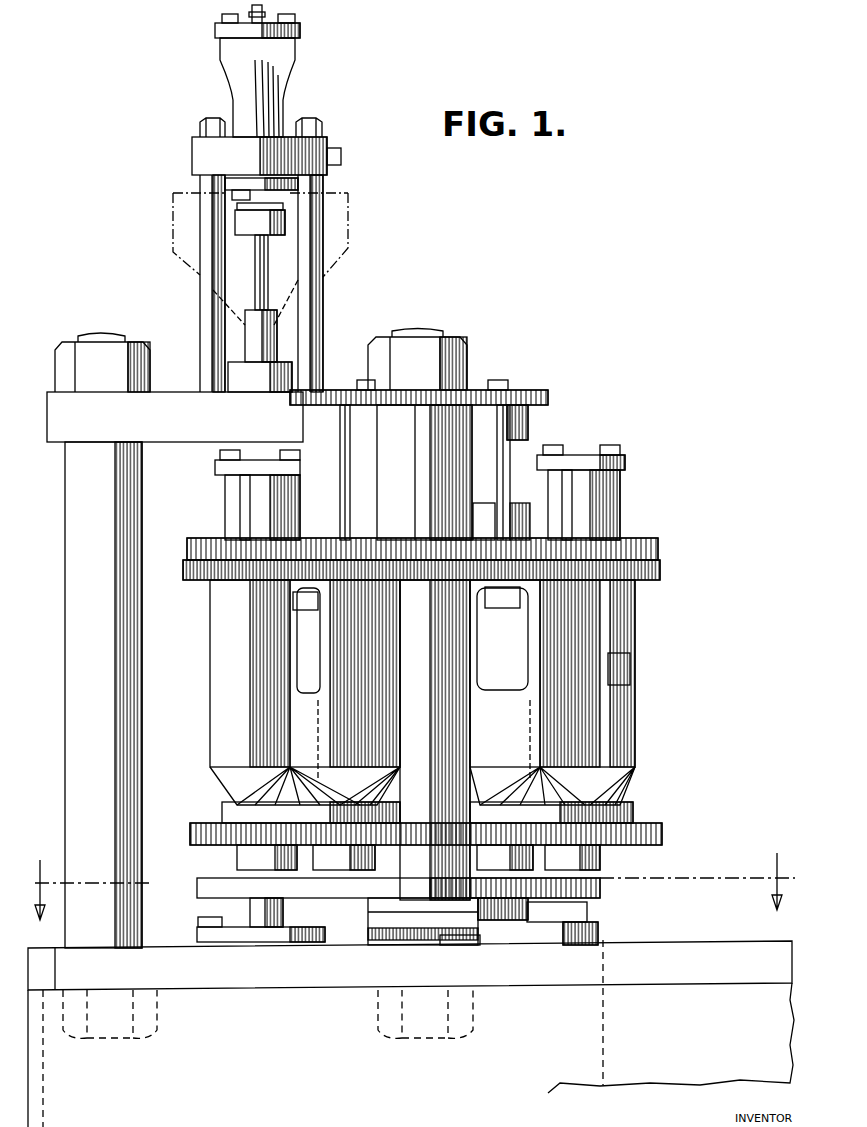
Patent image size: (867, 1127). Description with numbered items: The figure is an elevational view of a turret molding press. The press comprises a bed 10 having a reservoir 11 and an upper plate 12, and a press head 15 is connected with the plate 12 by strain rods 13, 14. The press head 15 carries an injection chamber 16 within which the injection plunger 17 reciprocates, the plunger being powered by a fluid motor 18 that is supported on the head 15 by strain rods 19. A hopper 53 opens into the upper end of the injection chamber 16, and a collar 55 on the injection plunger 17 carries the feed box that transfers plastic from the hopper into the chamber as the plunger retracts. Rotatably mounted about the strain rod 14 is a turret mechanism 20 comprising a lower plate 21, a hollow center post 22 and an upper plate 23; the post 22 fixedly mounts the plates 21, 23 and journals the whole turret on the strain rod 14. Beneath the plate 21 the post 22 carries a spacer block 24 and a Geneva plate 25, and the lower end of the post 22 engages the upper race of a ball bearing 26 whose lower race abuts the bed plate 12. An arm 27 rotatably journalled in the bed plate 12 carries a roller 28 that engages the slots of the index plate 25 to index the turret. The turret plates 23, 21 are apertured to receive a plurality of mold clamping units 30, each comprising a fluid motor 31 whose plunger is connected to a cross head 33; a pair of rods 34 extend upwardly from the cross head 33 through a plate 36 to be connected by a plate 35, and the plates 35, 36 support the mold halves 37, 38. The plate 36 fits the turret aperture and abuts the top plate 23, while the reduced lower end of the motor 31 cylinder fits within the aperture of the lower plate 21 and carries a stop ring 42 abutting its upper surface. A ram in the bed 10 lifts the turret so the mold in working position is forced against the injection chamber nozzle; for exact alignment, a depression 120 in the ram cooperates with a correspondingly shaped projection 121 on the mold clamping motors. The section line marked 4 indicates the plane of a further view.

The bed 10 is at (718, 935).
The reservoir 11 is at (712, 1047).
The upper plate 12 is at (342, 976).
The strain rod 13 is at (72, 560).
The strain rod 14 is at (460, 470).
The press head 15 is at (165, 397).
The injection chamber 16 is at (275, 345).
The injection plunger 17 is at (265, 276).
The fluid motor 18 is at (278, 107).
The strain rods 19 is at (200, 277).
The turret mechanism 20 is at (677, 528).
The lower plate 21 is at (662, 825).
The hollow center post 22 is at (440, 752).
The upper plate 23 is at (660, 568).
The spacer block 24 is at (395, 865).
The Geneva plate 25 is at (482, 890).
The ball bearing 26 is at (468, 945).
The arm 27 is at (580, 905).
The roller 28 is at (600, 878).
The mold clamping units 30 is at (295, 741).
The fluid motor 31 is at (240, 790).
The cross head 33 is at (300, 610).
The rods 34 is at (225, 502).
The plate 35 is at (300, 400).
The plate 36 is at (187, 553).
The mold half 37 is at (528, 420).
The mold half 38 is at (250, 524).
The stop ring 42 is at (235, 813).
The hopper 53 is at (338, 208).
The collar 55 is at (283, 222).
The depression 120 is at (258, 885).
The projection 121 is at (255, 875).
The section line 4- 4 is at (418, 890).